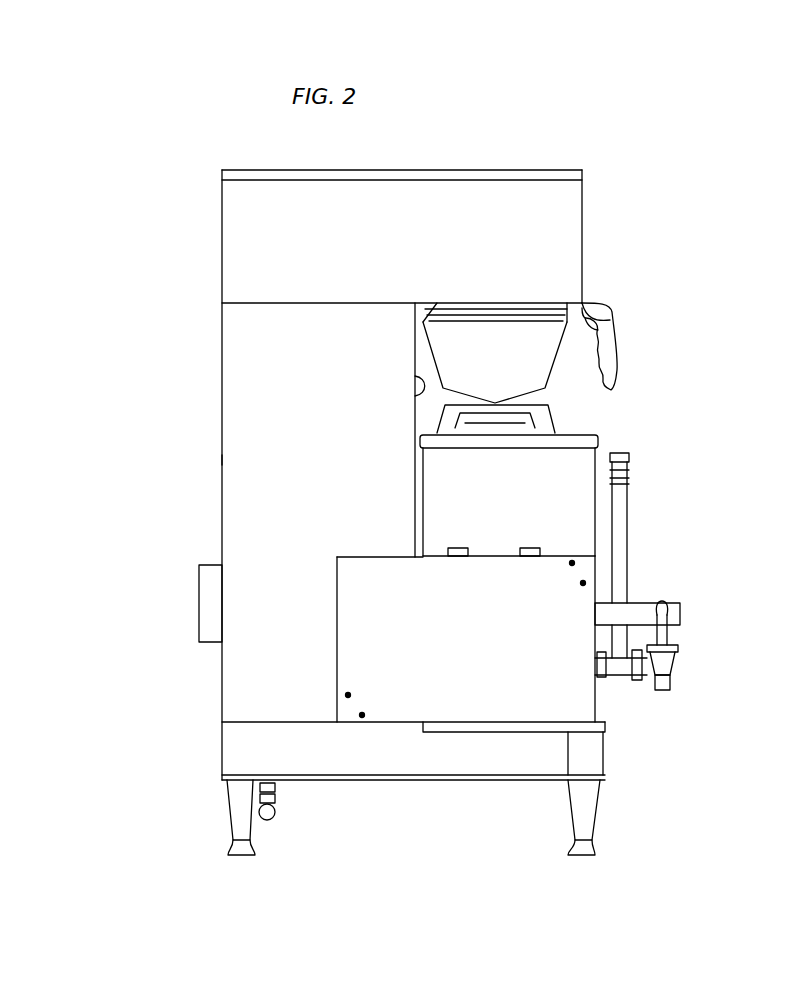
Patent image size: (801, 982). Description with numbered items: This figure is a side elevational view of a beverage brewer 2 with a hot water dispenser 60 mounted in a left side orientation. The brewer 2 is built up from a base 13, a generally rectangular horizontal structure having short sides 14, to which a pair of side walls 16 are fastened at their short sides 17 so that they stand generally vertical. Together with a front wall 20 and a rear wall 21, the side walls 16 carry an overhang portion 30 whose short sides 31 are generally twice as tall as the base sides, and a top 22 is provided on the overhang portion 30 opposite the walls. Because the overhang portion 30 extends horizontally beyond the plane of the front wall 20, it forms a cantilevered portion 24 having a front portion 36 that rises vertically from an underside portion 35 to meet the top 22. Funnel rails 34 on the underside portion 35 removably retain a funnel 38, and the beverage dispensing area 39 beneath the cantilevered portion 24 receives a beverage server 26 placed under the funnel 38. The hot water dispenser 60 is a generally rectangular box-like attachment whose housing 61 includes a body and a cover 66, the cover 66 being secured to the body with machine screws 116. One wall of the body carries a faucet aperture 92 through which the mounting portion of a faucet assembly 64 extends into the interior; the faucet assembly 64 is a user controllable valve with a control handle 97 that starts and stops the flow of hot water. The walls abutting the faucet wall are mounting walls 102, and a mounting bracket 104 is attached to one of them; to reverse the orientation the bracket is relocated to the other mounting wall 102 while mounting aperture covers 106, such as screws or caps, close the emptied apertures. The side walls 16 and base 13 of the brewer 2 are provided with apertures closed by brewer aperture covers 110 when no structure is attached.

The brewer 2 is at (613, 144).
The base 13 is at (550, 760).
The short sides of base 14 is at (462, 752).
The side walls 16 is at (262, 380).
The short sides of side walls 17 is at (222, 459).
The front wall 20 is at (417, 397).
The rear wall 21 is at (222, 529).
The top 22 is at (258, 170).
The cantilevered portion 24 is at (570, 257).
The beverage servers 26 is at (573, 493).
The overhang portion 30 is at (636, 190).
The short sides of overhang 31 is at (515, 196).
The funnel rails 34 is at (585, 320).
The underside portion 35 is at (437, 304).
The front portion 36 is at (582, 235).
The funnels 38 is at (592, 338).
The beverage dispensing area 39 is at (582, 412).
The hot water dispenser 60 is at (410, 742).
The housing 61 is at (425, 745).
The faucet assembly 64 is at (665, 660).
The cover 66 is at (353, 652).
The faucet aperture 92 is at (612, 650).
The control handle 97 is at (670, 613).
The mounting walls 102 is at (390, 568).
The mounting bracket 104 is at (510, 730).
The mounting aperture covers 106 is at (535, 548).
The brewer aperture covers 110 is at (545, 548).
The machine screws 116 is at (360, 563).